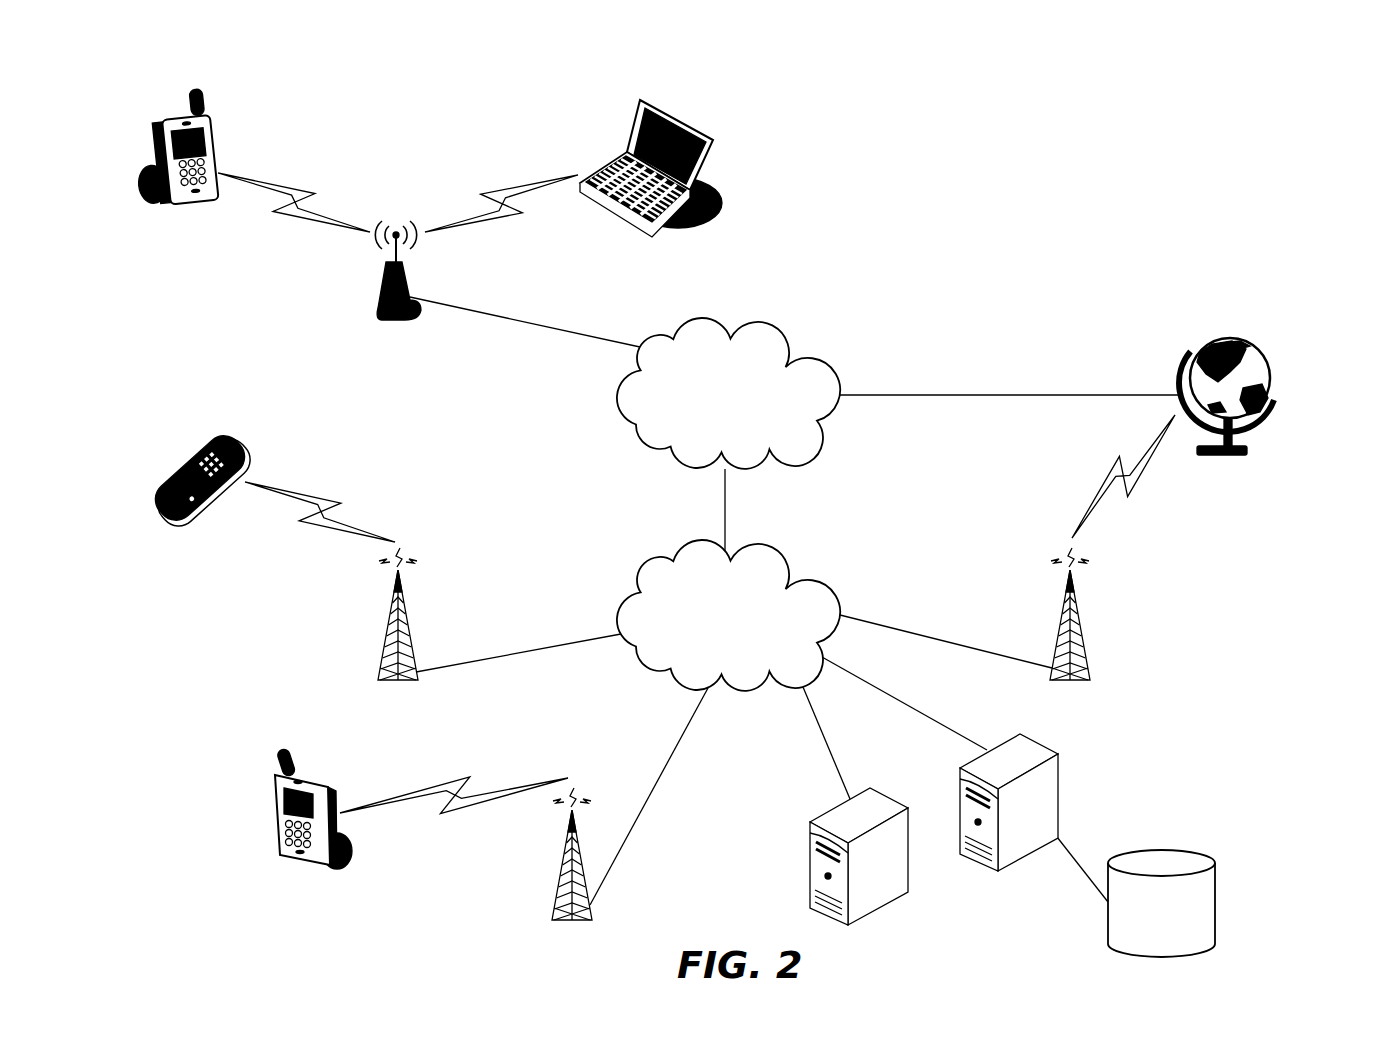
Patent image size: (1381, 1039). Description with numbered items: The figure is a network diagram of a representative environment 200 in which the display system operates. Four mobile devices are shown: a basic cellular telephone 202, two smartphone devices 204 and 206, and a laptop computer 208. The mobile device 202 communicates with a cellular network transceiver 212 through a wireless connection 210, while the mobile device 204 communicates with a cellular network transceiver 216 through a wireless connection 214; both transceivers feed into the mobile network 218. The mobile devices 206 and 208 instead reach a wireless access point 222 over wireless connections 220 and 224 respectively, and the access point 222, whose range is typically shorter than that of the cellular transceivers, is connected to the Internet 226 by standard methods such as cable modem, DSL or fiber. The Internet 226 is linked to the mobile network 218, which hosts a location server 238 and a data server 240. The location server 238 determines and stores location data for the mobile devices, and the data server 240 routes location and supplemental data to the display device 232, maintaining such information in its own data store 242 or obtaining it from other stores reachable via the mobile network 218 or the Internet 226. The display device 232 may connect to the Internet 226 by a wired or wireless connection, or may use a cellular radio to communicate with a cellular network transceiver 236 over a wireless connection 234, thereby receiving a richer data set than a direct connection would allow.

The environment 200 is at (1231, 186).
The mobile device 202 is at (165, 486).
The mobile device 204 is at (272, 812).
The mobile device 206 is at (155, 128).
The laptop computer 208 is at (712, 137).
The wireless connection 210 is at (323, 502).
The cellular network transceiver 212 is at (385, 622).
The wireless connection 214 is at (460, 780).
The cellular network transceiver 216 is at (557, 865).
The mobile network 218 is at (806, 554).
The wireless connection 220 is at (297, 188).
The wireless access point 222 is at (397, 323).
The wireless connection 224 is at (503, 178).
The Internet 226 is at (806, 328).
The display device 232 is at (1240, 333).
The wireless connection 234 is at (1113, 477).
The cellular network transceiver 236 is at (1082, 618).
The location server 238 is at (830, 808).
The data server 240 is at (1057, 798).
The data store 242 is at (1217, 907).